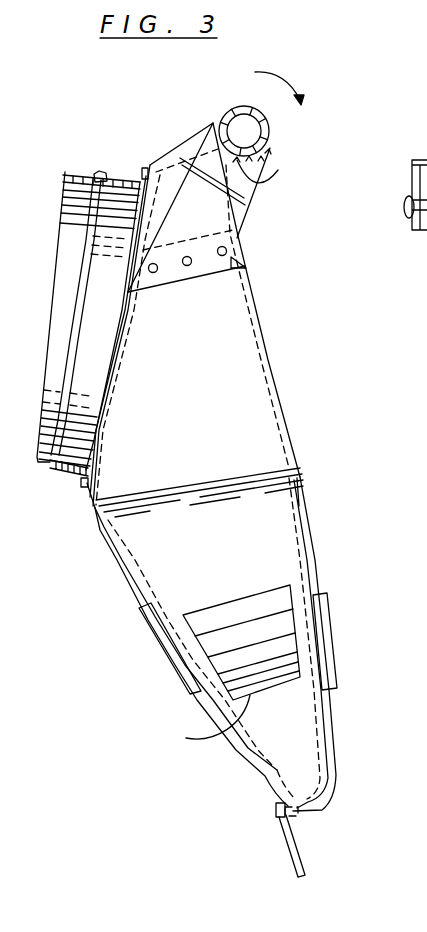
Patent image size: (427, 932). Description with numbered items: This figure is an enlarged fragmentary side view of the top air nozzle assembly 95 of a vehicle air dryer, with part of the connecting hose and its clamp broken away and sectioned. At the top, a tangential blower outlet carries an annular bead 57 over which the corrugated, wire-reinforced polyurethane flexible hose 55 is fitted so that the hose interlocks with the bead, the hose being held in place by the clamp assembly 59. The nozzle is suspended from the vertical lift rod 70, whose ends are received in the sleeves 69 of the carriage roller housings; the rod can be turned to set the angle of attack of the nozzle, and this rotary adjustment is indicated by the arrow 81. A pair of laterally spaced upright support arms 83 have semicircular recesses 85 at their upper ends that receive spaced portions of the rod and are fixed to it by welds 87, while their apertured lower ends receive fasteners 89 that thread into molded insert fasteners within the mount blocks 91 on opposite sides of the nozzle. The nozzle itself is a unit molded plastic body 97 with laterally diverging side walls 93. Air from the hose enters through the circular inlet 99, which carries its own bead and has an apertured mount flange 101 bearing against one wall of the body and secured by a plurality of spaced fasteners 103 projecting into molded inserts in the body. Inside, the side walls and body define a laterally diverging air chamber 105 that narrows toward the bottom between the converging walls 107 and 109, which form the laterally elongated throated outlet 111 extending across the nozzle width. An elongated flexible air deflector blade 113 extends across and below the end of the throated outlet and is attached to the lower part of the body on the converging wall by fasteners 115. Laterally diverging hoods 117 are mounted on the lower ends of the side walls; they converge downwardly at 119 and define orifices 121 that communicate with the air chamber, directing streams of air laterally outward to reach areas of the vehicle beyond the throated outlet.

The flexible hose 55 is at (42, 466).
The annular bead 57 is at (96, 171).
The clamp assembly 59 is at (131, 171).
The sleeve 69 is at (250, 107).
The vertical lift rod 70 is at (420, 233).
The arrow 81 is at (296, 92).
The support arms 83 is at (246, 213).
The semicircular recesses 85 is at (262, 181).
The welds 87 is at (268, 153).
The fasteners 89 is at (189, 266).
The mount blocks 91 is at (246, 268).
The side walls 93 is at (253, 392).
The top air nozzle assembly 95 is at (320, 497).
The unit molded plastic body 97 is at (292, 441).
The circular inlet 99 is at (100, 330).
The mount flange 101 is at (88, 515).
The fasteners 103 is at (89, 481).
The air chamber 105 is at (150, 624).
The converging wall 107 is at (322, 748).
The converging wall 109 is at (250, 786).
The throated outlet 111 is at (318, 811).
The flexible air deflector blade 113 is at (296, 870).
The fasteners 115 is at (276, 812).
The hoods 117 is at (256, 607).
The downwardly converging portion 119 is at (297, 648).
The orifices 121 is at (186, 738).